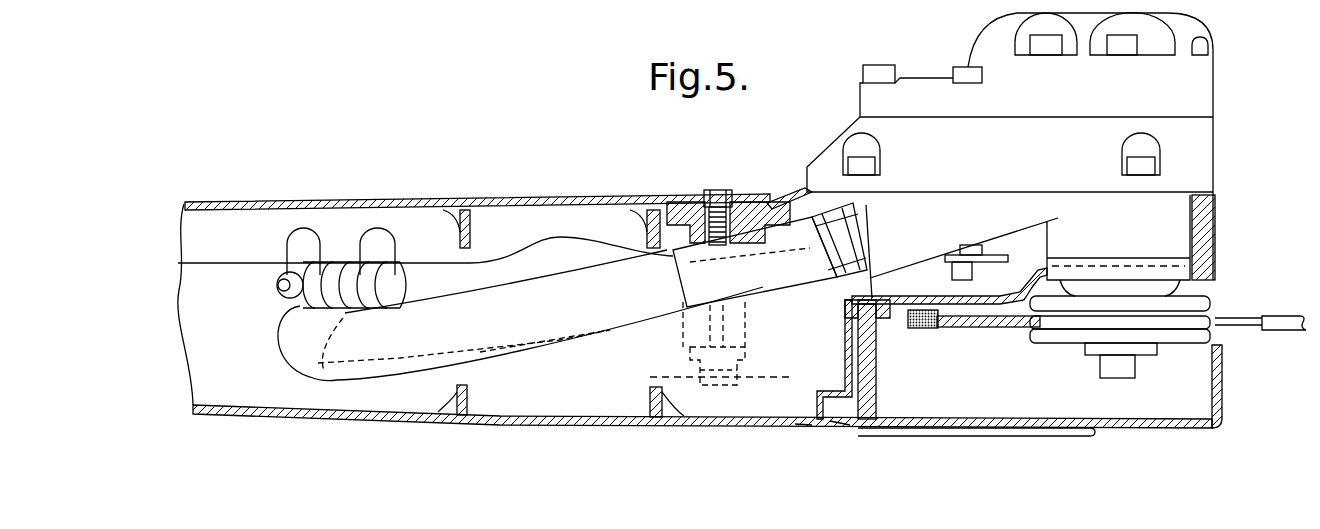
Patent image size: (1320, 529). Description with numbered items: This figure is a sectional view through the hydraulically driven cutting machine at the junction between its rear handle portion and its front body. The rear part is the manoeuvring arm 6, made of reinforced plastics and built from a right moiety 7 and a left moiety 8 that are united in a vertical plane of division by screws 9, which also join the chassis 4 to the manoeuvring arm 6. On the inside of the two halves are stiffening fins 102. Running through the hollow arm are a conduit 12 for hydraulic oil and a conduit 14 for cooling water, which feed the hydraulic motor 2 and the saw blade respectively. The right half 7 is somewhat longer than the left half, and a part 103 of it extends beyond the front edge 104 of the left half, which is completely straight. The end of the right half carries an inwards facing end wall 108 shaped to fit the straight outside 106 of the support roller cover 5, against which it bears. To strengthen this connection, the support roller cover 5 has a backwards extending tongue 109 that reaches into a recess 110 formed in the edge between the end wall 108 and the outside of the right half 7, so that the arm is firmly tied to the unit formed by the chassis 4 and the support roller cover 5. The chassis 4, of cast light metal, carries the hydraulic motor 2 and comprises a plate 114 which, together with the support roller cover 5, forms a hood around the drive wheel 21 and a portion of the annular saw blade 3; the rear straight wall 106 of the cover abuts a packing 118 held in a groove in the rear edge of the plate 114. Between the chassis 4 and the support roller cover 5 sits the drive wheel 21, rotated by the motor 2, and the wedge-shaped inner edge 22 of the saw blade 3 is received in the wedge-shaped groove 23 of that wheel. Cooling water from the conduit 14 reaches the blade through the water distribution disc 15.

The hydraulic motor 2 is at (1190, 88).
The annular saw blade 3 is at (1000, 327).
The chassis 4 is at (788, 191).
The support roller cover 5 is at (1152, 428).
The manoeuvring arm 6 is at (373, 192).
The right moiety 7 is at (528, 194).
The left moiety 8 is at (522, 424).
The screws 9 is at (716, 188).
The conduit for hydraulic oil 12 is at (577, 320).
The conduit for cooling water 14 is at (555, 258).
The water distribution disc 15 is at (1280, 314).
The drive wheel 21 is at (1068, 343).
The inner edge of the saw blade 22 is at (1032, 324).
The wedge-shaped groove 23 is at (1157, 321).
The stiffening fins 102 is at (455, 212).
The part of the right half 103 is at (801, 427).
The front edge of the left half 104 is at (703, 200).
The straight outside of the support roller cover 106 is at (874, 362).
The inwards facing end wall 108 is at (846, 354).
The tongue 109 is at (845, 432).
The recess 110 is at (840, 428).
The plate 114 is at (963, 293).
The packing 118 is at (850, 306).